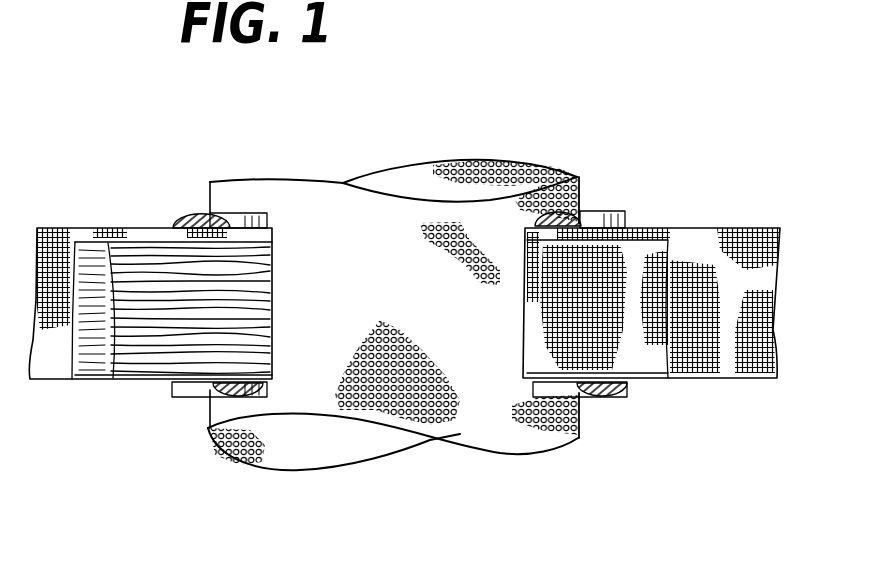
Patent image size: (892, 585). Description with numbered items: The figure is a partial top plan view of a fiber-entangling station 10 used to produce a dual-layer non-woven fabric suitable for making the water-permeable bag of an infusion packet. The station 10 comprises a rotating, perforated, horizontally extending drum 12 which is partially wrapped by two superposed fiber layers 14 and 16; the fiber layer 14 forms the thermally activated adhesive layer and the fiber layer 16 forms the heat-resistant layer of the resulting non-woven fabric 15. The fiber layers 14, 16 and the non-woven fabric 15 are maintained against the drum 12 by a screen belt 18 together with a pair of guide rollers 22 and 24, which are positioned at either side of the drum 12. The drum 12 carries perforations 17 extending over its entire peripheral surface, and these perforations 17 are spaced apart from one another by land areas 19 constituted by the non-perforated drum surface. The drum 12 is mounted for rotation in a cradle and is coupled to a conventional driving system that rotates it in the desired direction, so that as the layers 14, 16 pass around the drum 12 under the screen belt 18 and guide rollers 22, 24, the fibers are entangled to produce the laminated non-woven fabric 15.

The fiber-entangling station 10 is at (458, 155).
The drum 12 is at (558, 173).
The fiber layer 14 is at (180, 360).
The non-woven fabric 15 is at (632, 375).
The fiber layer 16 is at (67, 367).
The perforation 17 is at (400, 410).
The screen belt 18 is at (50, 228).
The land areas 19 is at (450, 407).
The guide roller 22 is at (610, 213).
The guide roller 24 is at (247, 220).